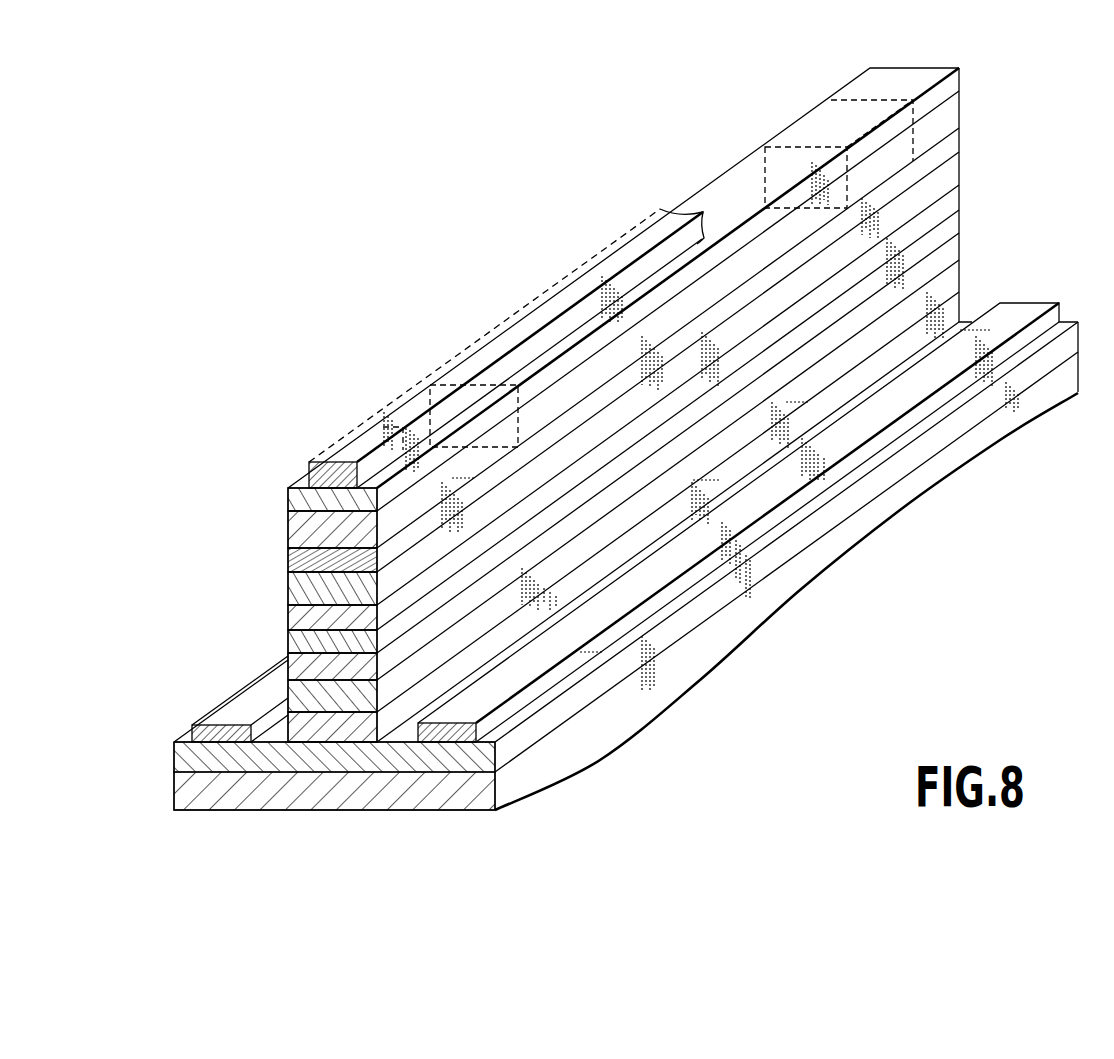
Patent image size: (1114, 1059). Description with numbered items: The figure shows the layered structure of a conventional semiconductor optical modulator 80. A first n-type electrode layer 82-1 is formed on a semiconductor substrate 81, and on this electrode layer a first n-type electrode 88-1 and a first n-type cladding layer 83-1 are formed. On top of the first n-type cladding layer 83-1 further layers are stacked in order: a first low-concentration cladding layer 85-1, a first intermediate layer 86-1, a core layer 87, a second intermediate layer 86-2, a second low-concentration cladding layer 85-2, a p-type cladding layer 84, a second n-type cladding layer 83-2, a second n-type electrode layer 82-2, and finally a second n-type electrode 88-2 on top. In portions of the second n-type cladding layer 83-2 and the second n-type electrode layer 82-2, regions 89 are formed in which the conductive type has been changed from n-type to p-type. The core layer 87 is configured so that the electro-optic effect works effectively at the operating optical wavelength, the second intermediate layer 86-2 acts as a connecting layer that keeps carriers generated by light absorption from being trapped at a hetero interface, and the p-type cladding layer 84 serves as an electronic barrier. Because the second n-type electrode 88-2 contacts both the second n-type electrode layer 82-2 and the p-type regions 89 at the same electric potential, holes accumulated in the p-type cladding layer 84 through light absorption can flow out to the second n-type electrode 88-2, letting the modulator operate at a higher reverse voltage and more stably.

The semiconductor optical modulator 80 is at (411, 214).
The semiconductor substrate 81 is at (372, 800).
The first n-type electrode layer 82-1 is at (263, 762).
The second n-type electrode layer 82-2 is at (300, 500).
The first n-type cladding layer 83-1 is at (290, 732).
The second n-type cladding layer 83-2 is at (300, 530).
The p-type cladding layer 84 is at (298, 560).
The first low-concentration cladding layer 85-1 is at (298, 695).
The second low-concentration cladding layer 85-2 is at (298, 590).
The first intermediate layer 86-1 is at (296, 666).
The second intermediate layer 86-2 is at (300, 618).
The core layer 87 is at (296, 641).
The first n-type electrode 88-1 is at (213, 720).
The second n-type electrode 88-2 is at (357, 446).
The regions 89 is at (486, 360).